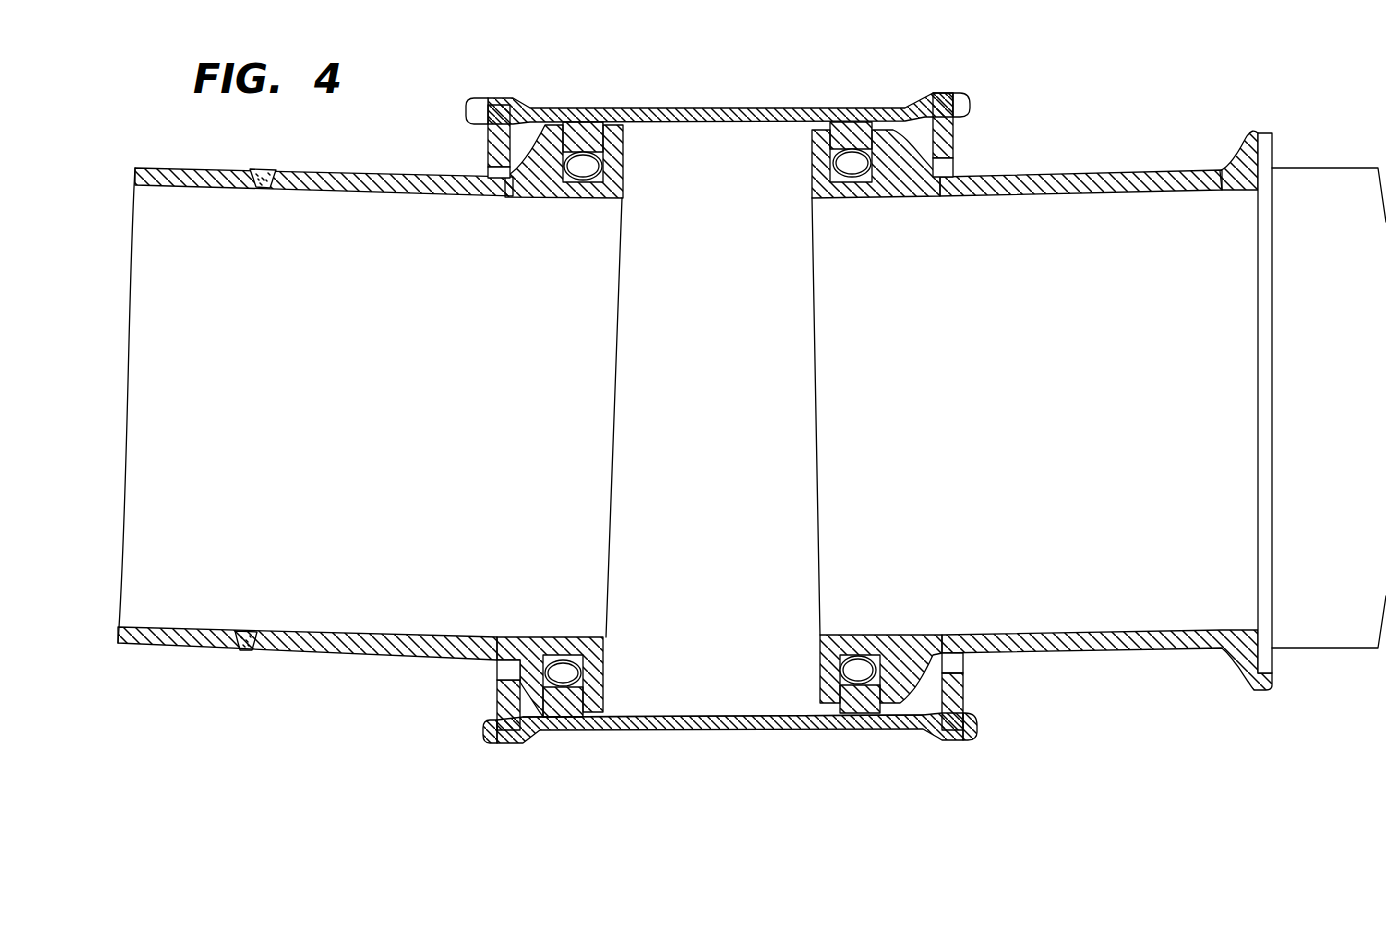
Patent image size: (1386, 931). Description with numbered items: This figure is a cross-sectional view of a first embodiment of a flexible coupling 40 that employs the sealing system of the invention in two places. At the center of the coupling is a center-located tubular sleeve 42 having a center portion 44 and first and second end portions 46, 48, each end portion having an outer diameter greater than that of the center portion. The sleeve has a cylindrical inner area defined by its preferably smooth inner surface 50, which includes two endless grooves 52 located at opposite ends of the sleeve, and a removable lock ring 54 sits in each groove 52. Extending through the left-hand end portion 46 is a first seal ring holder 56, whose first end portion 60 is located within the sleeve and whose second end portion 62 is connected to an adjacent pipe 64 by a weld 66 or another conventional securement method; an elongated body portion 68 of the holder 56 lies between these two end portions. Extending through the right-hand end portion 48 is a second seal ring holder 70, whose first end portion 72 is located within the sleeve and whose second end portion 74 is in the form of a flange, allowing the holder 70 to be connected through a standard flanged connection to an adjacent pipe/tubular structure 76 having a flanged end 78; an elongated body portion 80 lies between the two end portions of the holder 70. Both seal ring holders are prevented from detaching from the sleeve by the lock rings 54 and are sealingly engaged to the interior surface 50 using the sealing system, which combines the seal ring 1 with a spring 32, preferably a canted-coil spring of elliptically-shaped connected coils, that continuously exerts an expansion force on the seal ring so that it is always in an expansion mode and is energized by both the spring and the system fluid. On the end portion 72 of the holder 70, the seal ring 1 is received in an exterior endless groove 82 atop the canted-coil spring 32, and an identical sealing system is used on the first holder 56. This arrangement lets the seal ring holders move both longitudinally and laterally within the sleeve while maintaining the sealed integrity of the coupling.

The seal ring 1 is at (846, 125).
The spring 32 is at (863, 688).
The flexible coupling 40 is at (659, 757).
The tubular sleeve 42 is at (815, 750).
The center portion 44 is at (746, 732).
The first end portion 46 is at (508, 744).
The second end portion 48 is at (951, 742).
The inner surface 50 is at (721, 716).
The endless groove 52 is at (968, 726).
The removable lock ring 54 is at (962, 702).
The first seal ring holder 56 is at (274, 698).
The first end portion 60 is at (604, 693).
The second end portion 62 is at (268, 190).
The pipe 64 is at (159, 627).
The weld 66 is at (246, 651).
The elongated body portion 68 is at (392, 634).
The second seal ring holder 70 is at (1169, 652).
The first end portion 72 is at (812, 452).
The second end portion 74 is at (1255, 132).
The pipe/tubular structure 76 is at (1344, 176).
The flanged end 78 is at (1264, 135).
The elongated body portion 80 is at (1076, 632).
The exterior endless groove 82 is at (882, 138).